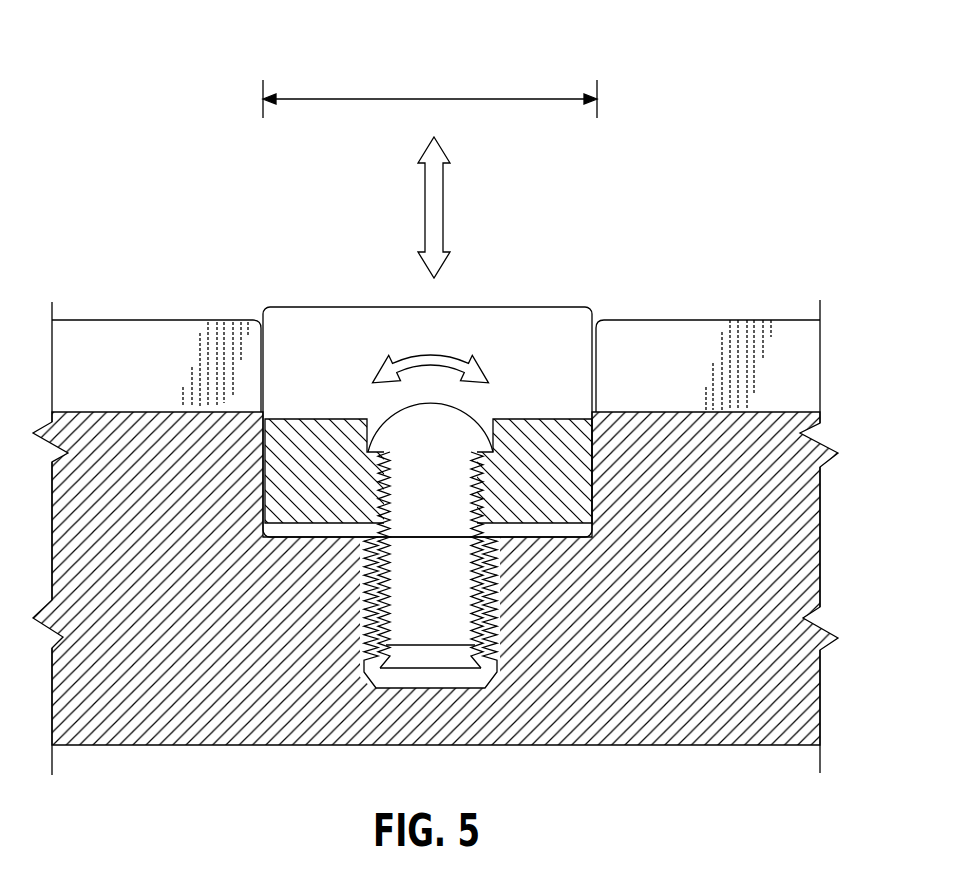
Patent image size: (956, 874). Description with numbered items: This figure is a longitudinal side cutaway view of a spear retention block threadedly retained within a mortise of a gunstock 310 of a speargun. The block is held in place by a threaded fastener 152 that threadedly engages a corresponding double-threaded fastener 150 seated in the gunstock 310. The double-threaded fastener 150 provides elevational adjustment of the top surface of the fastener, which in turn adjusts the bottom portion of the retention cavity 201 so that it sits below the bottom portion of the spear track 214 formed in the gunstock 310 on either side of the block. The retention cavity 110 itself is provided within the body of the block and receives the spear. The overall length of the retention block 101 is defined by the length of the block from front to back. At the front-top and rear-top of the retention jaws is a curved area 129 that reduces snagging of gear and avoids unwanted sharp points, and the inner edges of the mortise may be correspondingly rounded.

The overall length of the retention block 101 is at (343, 99).
The retention cavity 110 is at (448, 340).
The curved area 129 is at (263, 304).
The double-threaded fastener 150 is at (435, 675).
The threaded fastener 152 is at (448, 446).
The bottom portion of the retention cavity 201 is at (308, 418).
The spear track 214 is at (80, 412).
The gunstock 310 is at (745, 517).